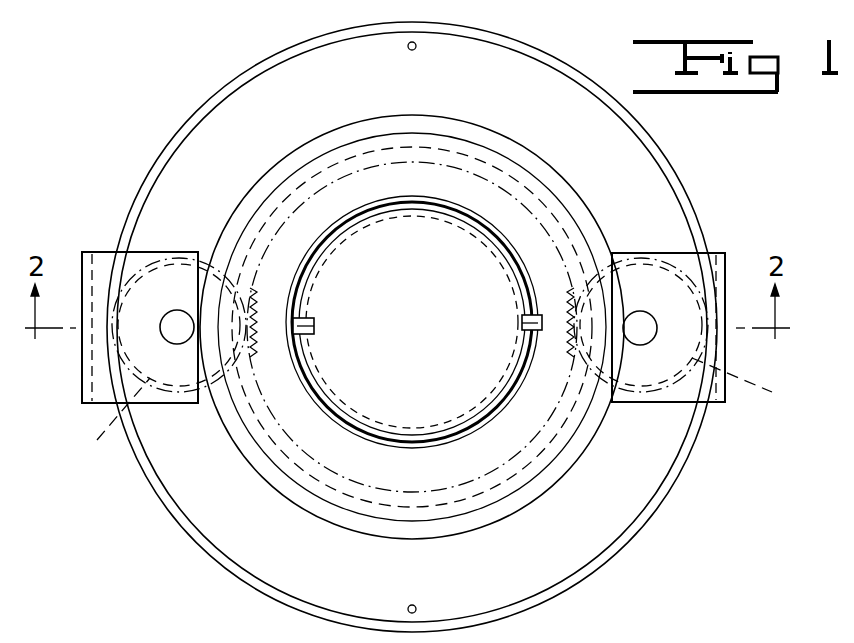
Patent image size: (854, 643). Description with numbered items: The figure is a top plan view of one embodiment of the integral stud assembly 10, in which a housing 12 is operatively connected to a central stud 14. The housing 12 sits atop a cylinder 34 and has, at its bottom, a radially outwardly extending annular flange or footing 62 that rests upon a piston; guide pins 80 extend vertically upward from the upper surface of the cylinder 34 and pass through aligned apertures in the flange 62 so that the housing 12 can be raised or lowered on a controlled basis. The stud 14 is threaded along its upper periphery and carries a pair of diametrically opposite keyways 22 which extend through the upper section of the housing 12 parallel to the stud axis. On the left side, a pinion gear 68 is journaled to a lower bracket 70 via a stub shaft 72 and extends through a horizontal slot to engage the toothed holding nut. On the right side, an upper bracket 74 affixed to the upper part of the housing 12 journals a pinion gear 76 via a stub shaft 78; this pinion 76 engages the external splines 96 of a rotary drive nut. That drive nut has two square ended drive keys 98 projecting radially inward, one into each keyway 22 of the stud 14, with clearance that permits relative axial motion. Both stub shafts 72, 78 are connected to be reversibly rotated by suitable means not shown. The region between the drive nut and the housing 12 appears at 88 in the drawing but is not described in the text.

The integral stud assembly 10 is at (410, 327).
The housing 12 is at (258, 182).
The stud 14 is at (421, 347).
The keyways 22 is at (317, 324).
The cylinder 34 is at (195, 538).
The annular flange or footing 62 is at (598, 560).
The pinion gear 68 is at (103, 424).
The lower bracket 70 is at (82, 252).
The stub shaft 72 is at (162, 318).
The upper bracket 74 is at (725, 253).
The pinion gear 76 is at (753, 386).
The stub shaft 78 is at (645, 345).
The guide pins 80 is at (409, 48).
The annular chamber 88 is at (528, 236).
The external splines 96 is at (490, 174).
The drive keys 98 is at (291, 334).